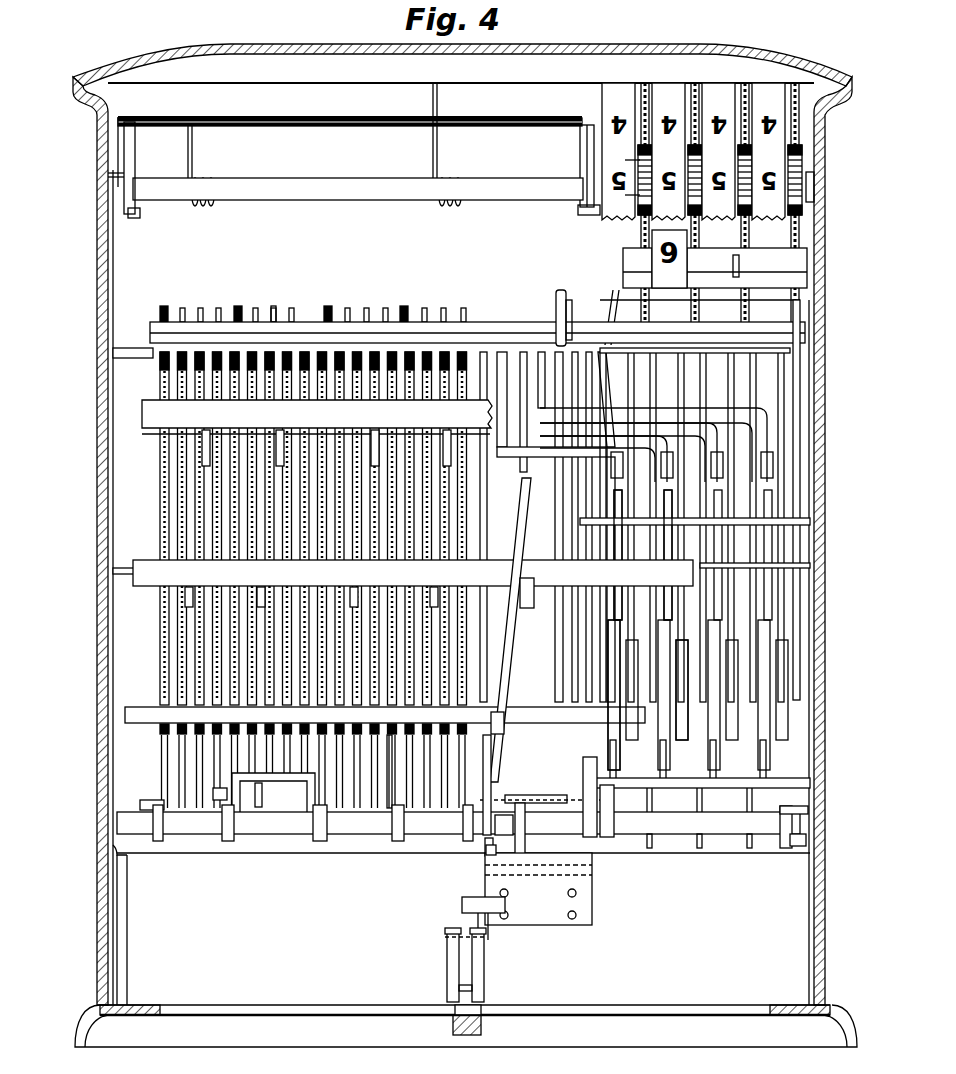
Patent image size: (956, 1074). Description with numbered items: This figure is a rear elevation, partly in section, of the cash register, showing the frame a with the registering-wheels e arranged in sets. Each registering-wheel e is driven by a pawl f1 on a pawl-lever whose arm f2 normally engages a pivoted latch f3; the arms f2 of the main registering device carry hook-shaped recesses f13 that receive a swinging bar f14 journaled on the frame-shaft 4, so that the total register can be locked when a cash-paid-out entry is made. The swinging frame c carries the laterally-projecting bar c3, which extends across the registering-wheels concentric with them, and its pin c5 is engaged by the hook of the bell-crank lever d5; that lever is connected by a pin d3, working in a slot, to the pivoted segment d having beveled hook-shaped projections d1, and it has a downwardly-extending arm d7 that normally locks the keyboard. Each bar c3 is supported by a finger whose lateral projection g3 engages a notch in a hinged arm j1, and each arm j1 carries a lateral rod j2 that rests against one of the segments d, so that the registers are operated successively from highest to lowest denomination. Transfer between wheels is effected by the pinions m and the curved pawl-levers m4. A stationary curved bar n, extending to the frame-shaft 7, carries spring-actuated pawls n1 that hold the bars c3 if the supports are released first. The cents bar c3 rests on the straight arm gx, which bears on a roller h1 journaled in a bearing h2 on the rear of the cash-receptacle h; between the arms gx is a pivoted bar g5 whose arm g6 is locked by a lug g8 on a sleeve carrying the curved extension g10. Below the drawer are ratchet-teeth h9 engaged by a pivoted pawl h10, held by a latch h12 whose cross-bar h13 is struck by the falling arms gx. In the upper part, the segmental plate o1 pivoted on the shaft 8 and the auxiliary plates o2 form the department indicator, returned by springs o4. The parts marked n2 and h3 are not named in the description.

The frame a is at (465, 545).
The segmental plate o1 is at (280, 124).
The auxiliary plate o2 is at (252, 118).
The spring o4 is at (192, 150).
The shaft 8 is at (345, 167).
The pinion m is at (163, 312).
The curved pawl-lever m4 is at (258, 308).
The laterally-projecting bar c3 is at (465, 523).
The registering-wheel e is at (200, 680).
The hinged arm j1 is at (507, 408).
The lateral projecting rod j2 is at (615, 460).
The swinging frame c is at (626, 476).
The pivoted segment d is at (608, 508).
The hook-shaped projection d1 is at (606, 555).
The pin d3 is at (602, 620).
The bell-crank lever d5 is at (748, 762).
The pin c5 is at (652, 730).
The pawl f1 is at (206, 440).
The stationary curved bar n is at (515, 568).
The spring-actuated pawl n1 is at (568, 304).
The lever end n2 is at (494, 732).
The swinging bar f14 is at (312, 774).
The pivoted latch f3 is at (282, 750).
The hook-shaped recess f13 is at (270, 806).
The arm f2 is at (370, 770).
The frame-shaft 4 is at (463, 826).
The downwardly-extending arm d7 is at (698, 848).
The bracket h3 is at (782, 846).
The frame-shaft 7 is at (128, 858).
The pivoted bar g5 is at (540, 790).
The curved extension g10 is at (523, 893).
The lateral projection g3 is at (504, 825).
The lug g8 is at (513, 838).
The projecting arm g6 is at (485, 842).
The straight arm gx is at (487, 850).
The roller h1 is at (578, 882).
The bearing h2 is at (488, 858).
The cross-bar h13 is at (468, 908).
The pivoted latch h12 is at (470, 966).
The pivoted pawl h10 is at (456, 1000).
The ratchet-teeth h9 is at (486, 1012).
The cash-receptacle h is at (329, 947).